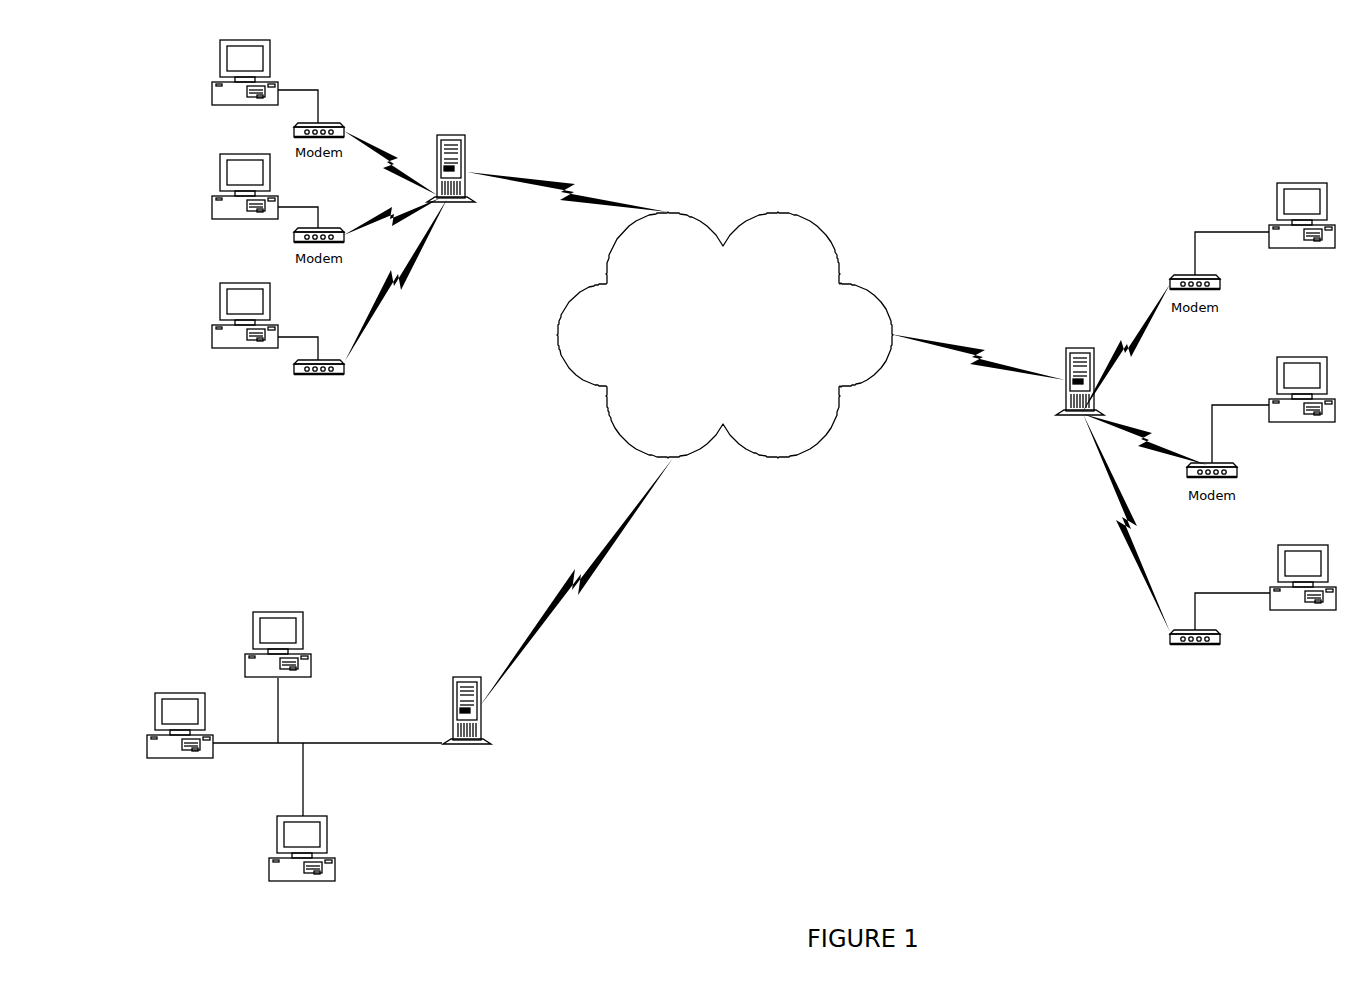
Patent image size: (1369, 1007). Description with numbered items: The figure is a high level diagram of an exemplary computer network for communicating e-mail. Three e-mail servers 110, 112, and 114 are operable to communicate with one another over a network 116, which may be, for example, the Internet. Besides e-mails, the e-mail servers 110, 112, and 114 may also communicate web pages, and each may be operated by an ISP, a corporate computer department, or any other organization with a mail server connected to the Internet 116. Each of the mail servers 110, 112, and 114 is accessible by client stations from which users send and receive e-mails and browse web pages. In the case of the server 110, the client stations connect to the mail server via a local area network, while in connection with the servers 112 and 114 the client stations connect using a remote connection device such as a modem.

The e-mail server 110 is at (482, 728).
The e-mail server 112 is at (466, 152).
The e-mail server 114 is at (1080, 348).
The network 116 is at (783, 458).